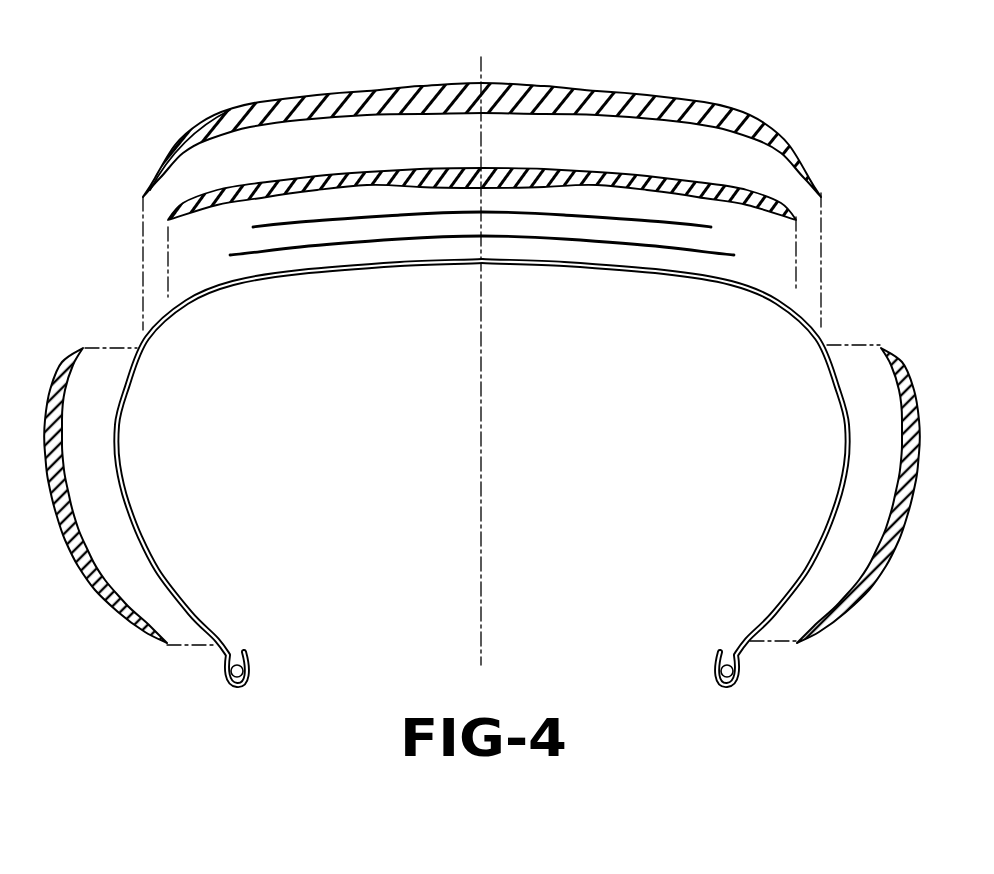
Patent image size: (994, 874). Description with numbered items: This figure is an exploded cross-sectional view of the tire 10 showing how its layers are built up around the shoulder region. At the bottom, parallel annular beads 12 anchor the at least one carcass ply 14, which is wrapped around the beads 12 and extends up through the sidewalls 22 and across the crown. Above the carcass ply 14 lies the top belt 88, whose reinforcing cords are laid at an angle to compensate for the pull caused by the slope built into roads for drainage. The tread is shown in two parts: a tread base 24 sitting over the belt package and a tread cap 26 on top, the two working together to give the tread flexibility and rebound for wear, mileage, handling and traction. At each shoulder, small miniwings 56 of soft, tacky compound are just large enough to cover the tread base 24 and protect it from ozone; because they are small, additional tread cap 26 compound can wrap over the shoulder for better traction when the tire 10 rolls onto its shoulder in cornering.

The tire 10 is at (482, 399).
The annular beads 12 is at (244, 670).
The carcass ply 14 is at (126, 483).
The sidewalls 22 is at (76, 360).
The tread base 24 is at (574, 168).
The tread cap 26 is at (340, 92).
The miniwings 56 is at (142, 192).
The top belt 88 is at (686, 214).